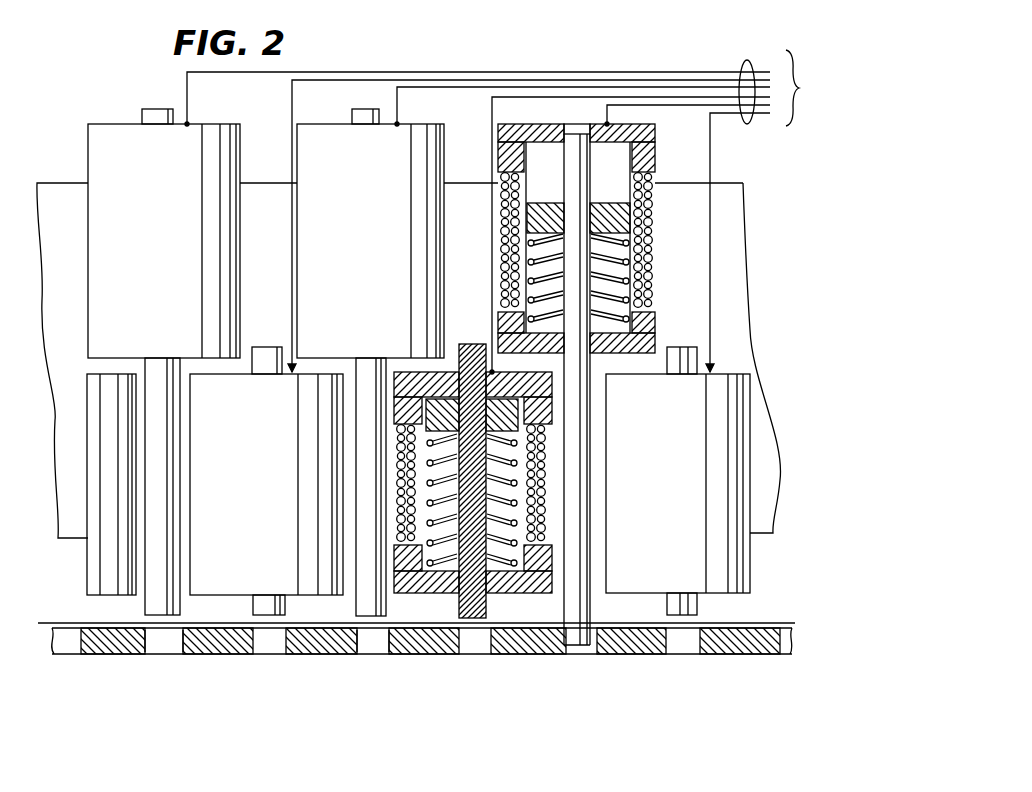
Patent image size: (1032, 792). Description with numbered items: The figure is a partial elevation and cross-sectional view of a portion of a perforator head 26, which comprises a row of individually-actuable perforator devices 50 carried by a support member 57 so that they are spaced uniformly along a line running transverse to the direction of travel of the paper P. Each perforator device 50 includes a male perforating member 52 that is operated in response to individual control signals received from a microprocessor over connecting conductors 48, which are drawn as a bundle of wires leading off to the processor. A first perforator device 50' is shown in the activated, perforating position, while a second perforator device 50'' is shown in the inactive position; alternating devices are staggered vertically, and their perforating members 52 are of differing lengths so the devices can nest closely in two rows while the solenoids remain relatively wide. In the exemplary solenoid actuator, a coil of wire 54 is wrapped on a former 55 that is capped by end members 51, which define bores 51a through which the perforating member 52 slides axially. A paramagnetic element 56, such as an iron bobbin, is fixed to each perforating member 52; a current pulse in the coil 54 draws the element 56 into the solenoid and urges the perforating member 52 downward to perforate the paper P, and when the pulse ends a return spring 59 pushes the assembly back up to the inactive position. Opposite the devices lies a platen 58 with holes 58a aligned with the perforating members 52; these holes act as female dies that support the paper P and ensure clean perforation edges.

The perforator head 26 is at (93, 106).
The connecting conductors 48 is at (746, 63).
The perforator device 50 is at (381, 352).
The first perforator device 50' is at (554, 177).
The second perforator device 50'' is at (446, 465).
The end member 51 is at (655, 149).
The bore 51a is at (566, 125).
The perforating member 52 is at (145, 607).
The coil of wire 54 is at (652, 200).
The former 55 is at (632, 287).
The paramagnetic element 56 is at (617, 218).
The support member 57 is at (42, 292).
The platen 58 is at (536, 655).
The hole 58a is at (170, 648).
The return spring 59 is at (510, 511).
The paper P is at (760, 620).